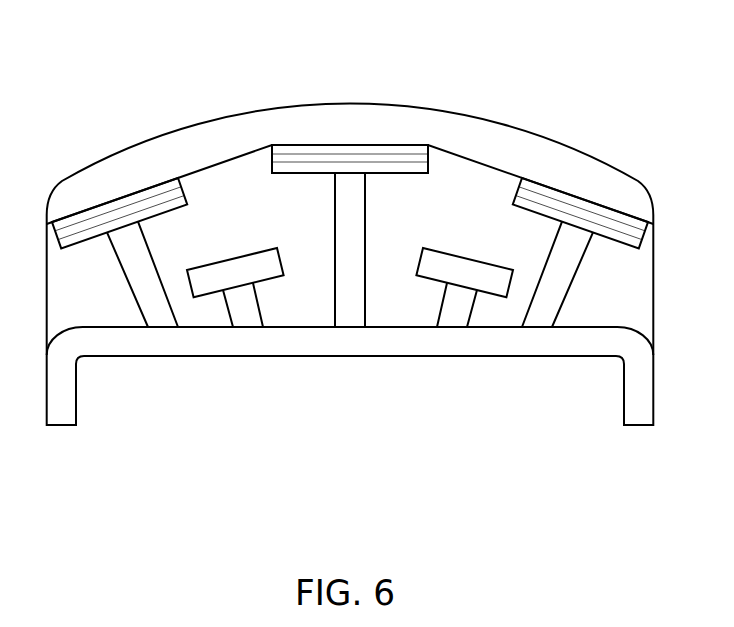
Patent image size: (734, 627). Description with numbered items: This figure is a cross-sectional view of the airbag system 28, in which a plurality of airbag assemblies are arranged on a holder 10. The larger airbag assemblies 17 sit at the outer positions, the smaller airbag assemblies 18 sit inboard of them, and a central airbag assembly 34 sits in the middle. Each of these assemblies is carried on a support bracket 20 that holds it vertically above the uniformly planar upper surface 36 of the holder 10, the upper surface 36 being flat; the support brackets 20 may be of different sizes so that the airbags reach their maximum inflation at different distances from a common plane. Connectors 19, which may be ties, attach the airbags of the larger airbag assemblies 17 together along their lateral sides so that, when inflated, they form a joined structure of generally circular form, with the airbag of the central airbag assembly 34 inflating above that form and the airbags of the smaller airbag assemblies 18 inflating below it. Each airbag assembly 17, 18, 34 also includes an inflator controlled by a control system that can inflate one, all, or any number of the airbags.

The holder 10 is at (382, 242).
The airbag assembly 17 is at (115, 199).
The airbag assembly 18 is at (233, 258).
The connector 19 is at (198, 172).
The support bracket 20 is at (157, 310).
The airbag system 28 is at (152, 138).
The central airbag assembly 34 is at (375, 145).
The upper surface 36 is at (597, 325).